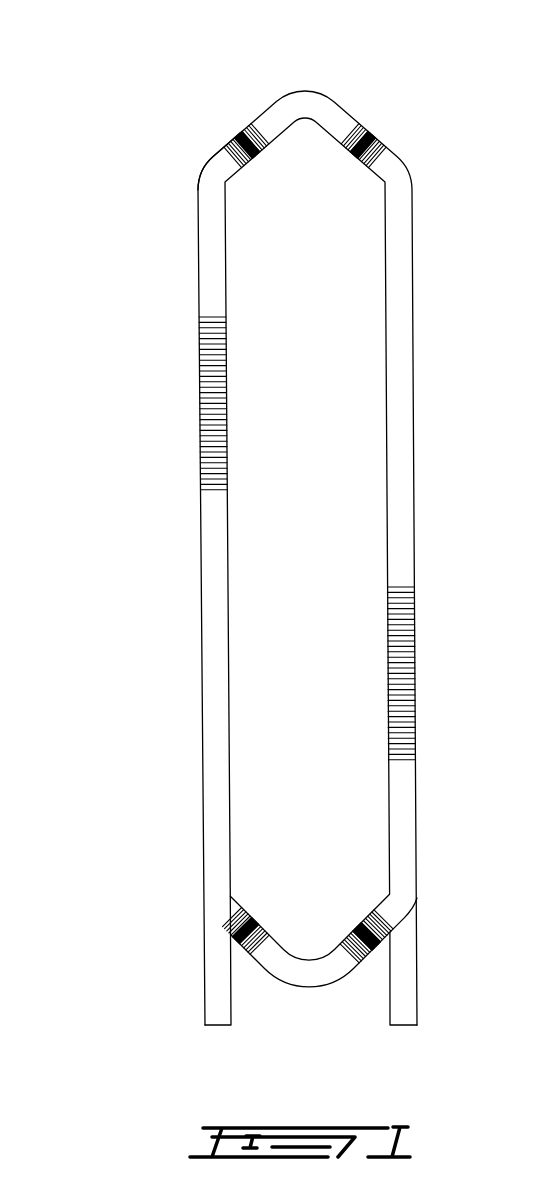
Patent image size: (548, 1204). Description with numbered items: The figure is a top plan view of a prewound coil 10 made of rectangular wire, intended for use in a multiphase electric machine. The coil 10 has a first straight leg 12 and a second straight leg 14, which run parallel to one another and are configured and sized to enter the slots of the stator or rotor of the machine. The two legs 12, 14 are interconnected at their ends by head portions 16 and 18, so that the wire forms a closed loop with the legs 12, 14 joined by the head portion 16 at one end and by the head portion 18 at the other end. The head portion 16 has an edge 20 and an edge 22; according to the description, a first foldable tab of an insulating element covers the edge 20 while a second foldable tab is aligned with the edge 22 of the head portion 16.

The prewound coil 10 is at (243, 523).
The first straight leg 12 is at (218, 422).
The second straight leg 14 is at (398, 512).
The head portion 16 is at (218, 150).
The head portion 18 is at (275, 932).
The edge 20 is at (367, 120).
The edge 22 is at (250, 118).